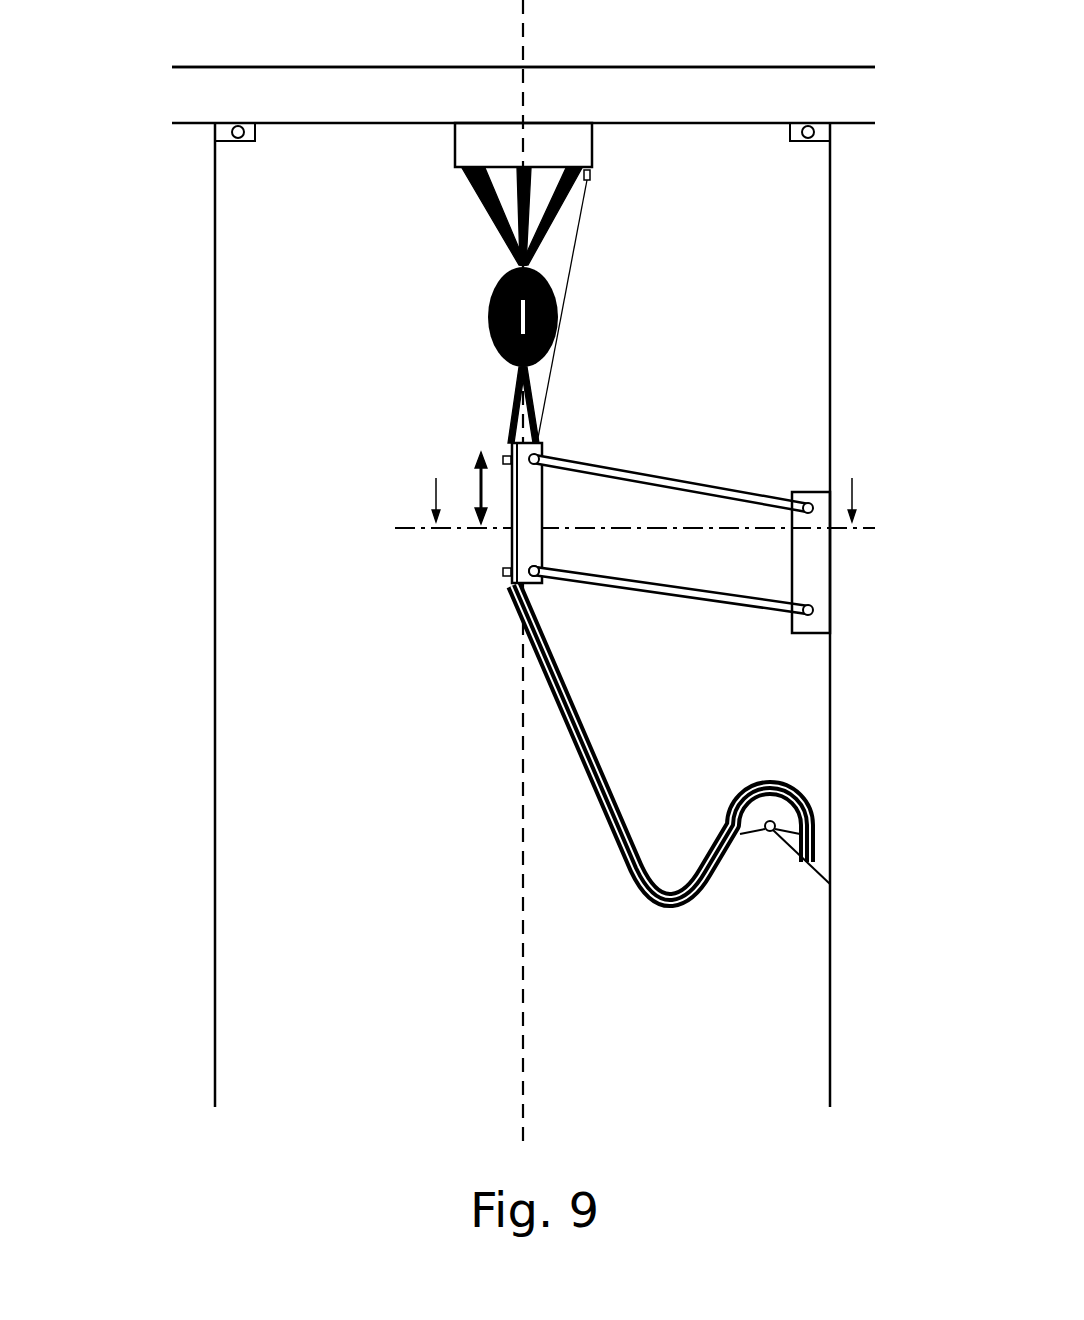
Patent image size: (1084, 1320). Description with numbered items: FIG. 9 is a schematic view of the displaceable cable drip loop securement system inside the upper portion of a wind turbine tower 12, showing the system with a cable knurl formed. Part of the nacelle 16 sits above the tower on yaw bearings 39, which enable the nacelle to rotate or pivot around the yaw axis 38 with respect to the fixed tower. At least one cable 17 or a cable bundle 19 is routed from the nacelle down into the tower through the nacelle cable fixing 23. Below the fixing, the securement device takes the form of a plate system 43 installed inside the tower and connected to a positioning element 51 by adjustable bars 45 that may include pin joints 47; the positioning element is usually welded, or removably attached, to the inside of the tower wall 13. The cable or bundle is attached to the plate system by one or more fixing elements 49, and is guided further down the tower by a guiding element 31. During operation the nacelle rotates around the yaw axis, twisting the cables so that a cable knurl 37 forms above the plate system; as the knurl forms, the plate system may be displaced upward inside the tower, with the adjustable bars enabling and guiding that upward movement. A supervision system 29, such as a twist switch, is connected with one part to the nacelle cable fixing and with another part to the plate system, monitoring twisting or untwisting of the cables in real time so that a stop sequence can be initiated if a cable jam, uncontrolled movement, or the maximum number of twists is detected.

The tower 12 is at (132, 432).
The tower wall 13 is at (215, 597).
The nacelle 16 is at (226, 66).
The cable 17 is at (478, 198).
The cable bundle 19 is at (455, 252).
The nacelle cable fixing 23 is at (458, 122).
The supervision system 29 is at (592, 175).
The guiding element 31 is at (766, 835).
The cable knurl 37 is at (440, 305).
The yaw axis 38 is at (525, 32).
The yaw bearings 39 is at (830, 132).
The plate system 43 is at (450, 578).
The adjustable bars 45 is at (665, 472).
The pin joints 47 is at (545, 585).
The fixing elements 49 is at (510, 460).
The positioning element 51 is at (832, 570).